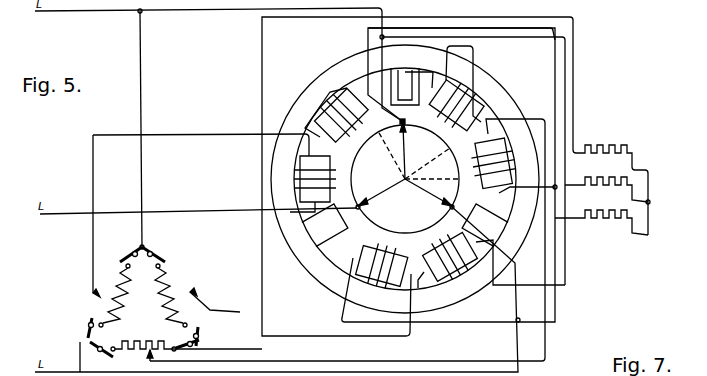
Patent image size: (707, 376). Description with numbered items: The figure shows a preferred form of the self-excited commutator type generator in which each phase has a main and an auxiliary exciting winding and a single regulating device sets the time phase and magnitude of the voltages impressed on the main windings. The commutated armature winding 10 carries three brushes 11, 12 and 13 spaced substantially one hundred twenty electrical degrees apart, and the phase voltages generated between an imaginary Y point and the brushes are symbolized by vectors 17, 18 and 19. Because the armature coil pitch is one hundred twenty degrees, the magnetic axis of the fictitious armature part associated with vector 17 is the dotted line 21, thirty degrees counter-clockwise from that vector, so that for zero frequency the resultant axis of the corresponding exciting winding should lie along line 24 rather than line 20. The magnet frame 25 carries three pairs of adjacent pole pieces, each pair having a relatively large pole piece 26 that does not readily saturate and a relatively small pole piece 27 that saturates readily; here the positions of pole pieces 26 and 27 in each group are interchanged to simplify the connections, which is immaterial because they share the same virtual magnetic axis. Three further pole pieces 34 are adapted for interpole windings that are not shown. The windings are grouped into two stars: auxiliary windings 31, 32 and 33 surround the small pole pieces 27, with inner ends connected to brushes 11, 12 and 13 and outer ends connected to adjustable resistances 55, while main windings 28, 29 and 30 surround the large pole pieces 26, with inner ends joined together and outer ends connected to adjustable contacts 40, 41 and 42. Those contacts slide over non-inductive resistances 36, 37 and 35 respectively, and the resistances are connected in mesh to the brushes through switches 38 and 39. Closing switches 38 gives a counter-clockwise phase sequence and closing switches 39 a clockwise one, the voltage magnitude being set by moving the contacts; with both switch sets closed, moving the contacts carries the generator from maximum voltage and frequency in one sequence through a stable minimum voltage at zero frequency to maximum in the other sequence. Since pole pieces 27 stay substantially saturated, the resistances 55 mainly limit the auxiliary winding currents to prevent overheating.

The armature winding 10 is at (356, 162).
The brush 11 is at (398, 120).
The brush 12 is at (335, 282).
The brush 13 is at (200, 204).
The voltage vector 17 is at (402, 140).
The voltage vector 18 is at (381, 196).
The voltage vector 19 is at (428, 195).
The magnetic axis line 20 is at (432, 170).
The magnetic axis dotted line 21 is at (386, 151).
The resultant magnetic axis line 24 is at (428, 162).
The magnet frame 25 is at (312, 90).
The large pole piece 26 is at (340, 126).
The small pole piece 27 is at (330, 178).
The exciting winding 28 is at (496, 150).
The exciting winding 29 is at (378, 280).
The exciting winding 30 is at (335, 108).
The exciting winding 31 is at (455, 90).
The exciting winding 32 is at (458, 266).
The exciting winding 33 is at (300, 184).
The interpole piece 34 is at (416, 104).
The resistance 35 is at (172, 310).
The resistance 36 is at (150, 341).
The resistance 37 is at (120, 304).
The switch 38 is at (139, 300).
The switch 39 is at (153, 304).
The adjustable contact 40 is at (148, 362).
The adjustable contact 41 is at (92, 291).
The adjustable contact 42 is at (213, 291).
The adjustable resistance 55 is at (605, 149).